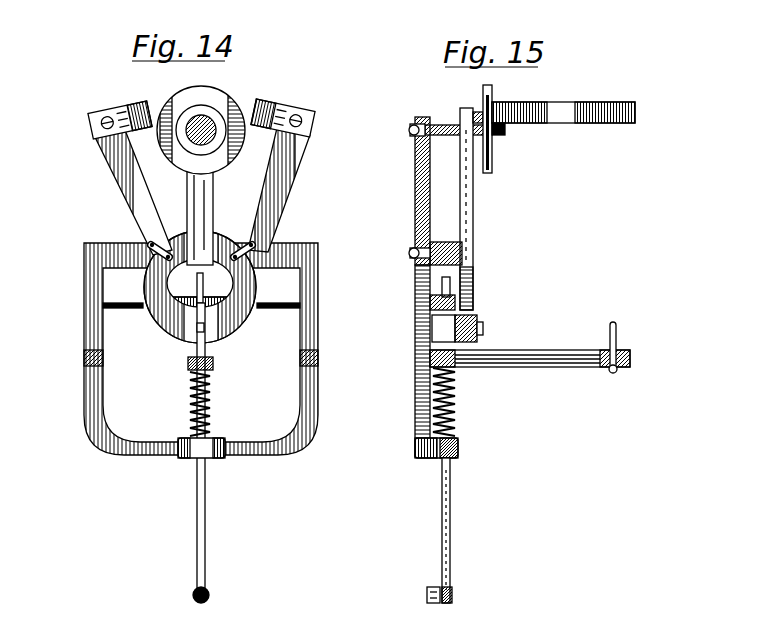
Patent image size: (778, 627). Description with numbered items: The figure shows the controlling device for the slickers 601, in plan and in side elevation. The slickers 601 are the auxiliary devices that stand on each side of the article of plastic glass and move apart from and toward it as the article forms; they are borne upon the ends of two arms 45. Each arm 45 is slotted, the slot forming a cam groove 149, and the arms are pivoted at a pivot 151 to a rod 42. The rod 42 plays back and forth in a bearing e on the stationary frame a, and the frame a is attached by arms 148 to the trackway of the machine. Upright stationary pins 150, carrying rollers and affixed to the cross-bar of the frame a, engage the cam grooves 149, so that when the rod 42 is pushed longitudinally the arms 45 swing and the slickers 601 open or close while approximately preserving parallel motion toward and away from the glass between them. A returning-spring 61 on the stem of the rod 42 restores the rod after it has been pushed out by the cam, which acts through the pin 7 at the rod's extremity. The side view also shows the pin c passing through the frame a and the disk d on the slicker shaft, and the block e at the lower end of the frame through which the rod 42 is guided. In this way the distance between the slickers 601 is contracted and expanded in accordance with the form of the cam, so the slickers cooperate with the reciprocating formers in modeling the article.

In FIG. 14, the slicker 601 is at (201, 110).
In FIG. 15, the slicker 601 is at (563, 125).
In FIG. 14, the arm 45 is at (243, 340).
In FIG. 15, the arm 45 is at (473, 212).
In FIG. 14, the cam groove or slot 149 is at (150, 246).
In FIG. 14, the stationary pin 150 is at (201, 287).
In FIG. 15, the stationary pin 150 is at (470, 258).
In FIG. 14, the arm 148 is at (84, 359).
In FIG. 15, the arm 148 is at (530, 356).
In FIG. 15, the pivot 151 is at (471, 309).
In FIG. 14, the returning-spring 61 is at (211, 404).
In FIG. 15, the returning-spring 61 is at (455, 395).
In FIG. 14, the rod 42 is at (205, 535).
In FIG. 15, the rod 42 is at (450, 553).
In FIG. 14, the foot 7 is at (210, 597).
In FIG. 15, the foot 7 is at (427, 595).
In FIG. 14, the stationary frame a is at (188, 157).
In FIG. 15, the stationary frame a is at (415, 212).
In FIG. 15, the pin c is at (450, 130).
In FIG. 15, the disk d is at (492, 160).
In FIG. 14, the bearing e is at (201, 448).
In FIG. 15, the bearing e is at (436, 448).